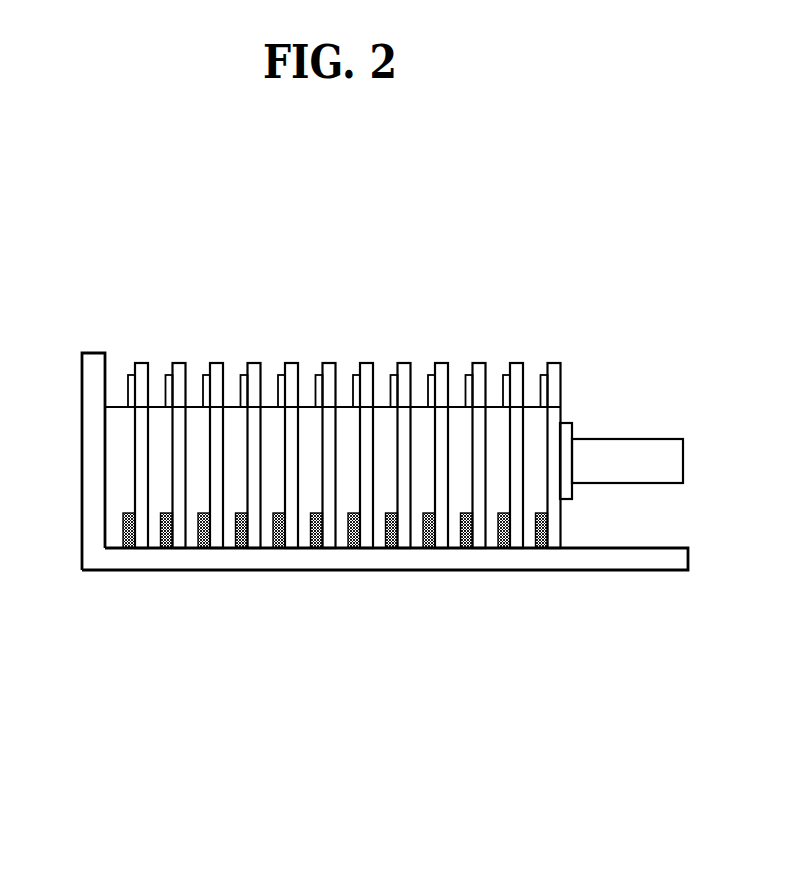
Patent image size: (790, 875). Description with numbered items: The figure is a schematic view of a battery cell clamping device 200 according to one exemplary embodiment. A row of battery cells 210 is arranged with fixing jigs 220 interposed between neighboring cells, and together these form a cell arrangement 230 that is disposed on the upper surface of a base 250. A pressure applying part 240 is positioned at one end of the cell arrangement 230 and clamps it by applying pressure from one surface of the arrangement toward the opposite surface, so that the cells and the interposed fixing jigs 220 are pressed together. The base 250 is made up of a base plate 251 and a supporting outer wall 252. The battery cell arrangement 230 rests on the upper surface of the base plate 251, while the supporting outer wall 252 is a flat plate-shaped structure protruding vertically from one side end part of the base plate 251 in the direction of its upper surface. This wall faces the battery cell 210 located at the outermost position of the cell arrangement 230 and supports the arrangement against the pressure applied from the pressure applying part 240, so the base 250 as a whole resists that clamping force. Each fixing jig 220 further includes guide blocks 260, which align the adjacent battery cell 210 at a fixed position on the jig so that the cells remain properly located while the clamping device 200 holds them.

The battery cell clamping device 200 is at (130, 316).
The battery cell 210 is at (306, 405).
The fixing jig 220 is at (410, 358).
The cell arrangement 230 is at (232, 328).
The pressure applying part 240 is at (604, 439).
The base 250 is at (376, 511).
The base plate 251 is at (178, 560).
The supporting outer wall 252 is at (93, 506).
The guide block 260 is at (350, 540).